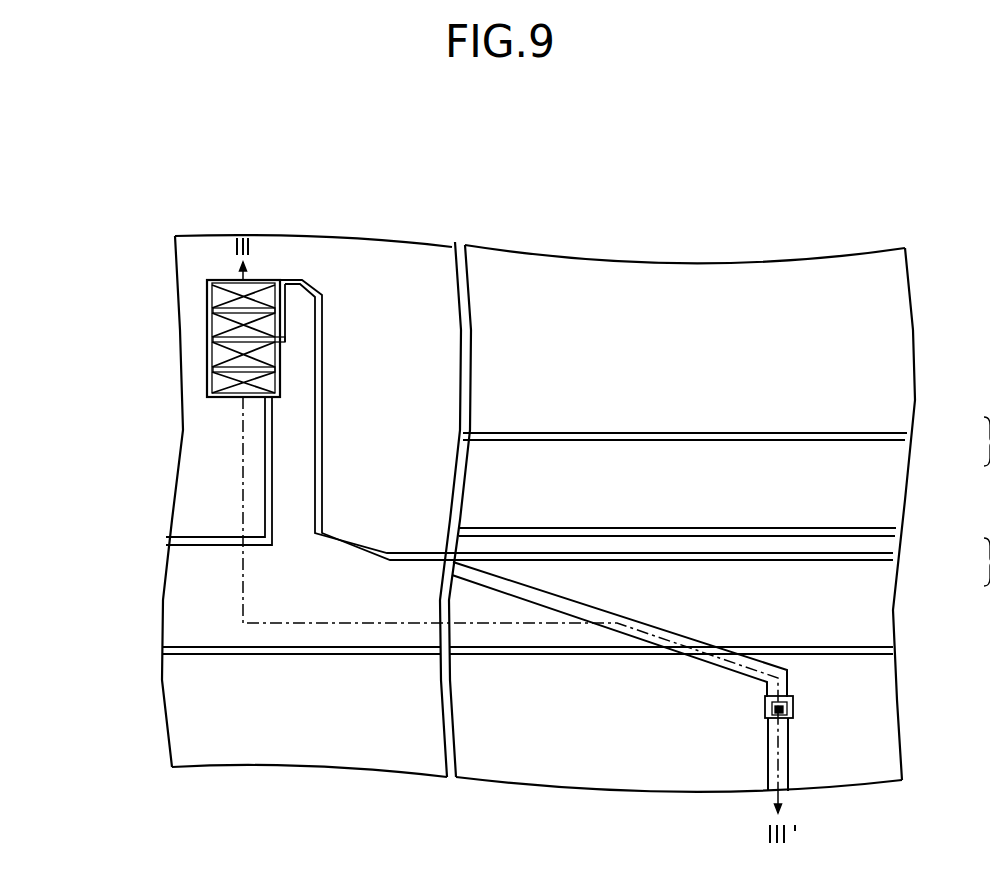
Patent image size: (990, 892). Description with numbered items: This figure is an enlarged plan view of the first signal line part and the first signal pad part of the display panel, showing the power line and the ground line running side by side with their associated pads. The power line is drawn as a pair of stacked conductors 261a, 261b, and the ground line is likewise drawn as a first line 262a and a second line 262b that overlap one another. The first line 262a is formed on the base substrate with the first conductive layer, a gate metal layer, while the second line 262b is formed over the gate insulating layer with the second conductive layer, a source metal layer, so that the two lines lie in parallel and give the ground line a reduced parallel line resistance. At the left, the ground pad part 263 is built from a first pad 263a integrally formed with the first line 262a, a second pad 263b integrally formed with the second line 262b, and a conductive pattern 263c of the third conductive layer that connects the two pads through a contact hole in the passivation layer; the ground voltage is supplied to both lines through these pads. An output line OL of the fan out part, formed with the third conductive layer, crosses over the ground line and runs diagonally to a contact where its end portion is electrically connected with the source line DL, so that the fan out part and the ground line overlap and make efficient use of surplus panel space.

The ground pad part 263 is at (164, 338).
The first pad 263a is at (210, 323).
The second pad 263b is at (210, 354).
The conductive pattern 263c is at (210, 290).
The first line of first signal line 261a is at (877, 440).
The second line of first signal line 261b is at (893, 433).
The first line 262a is at (877, 560).
The second line 262b is at (895, 552).
The output line OL is at (567, 602).
The source line DL is at (788, 755).